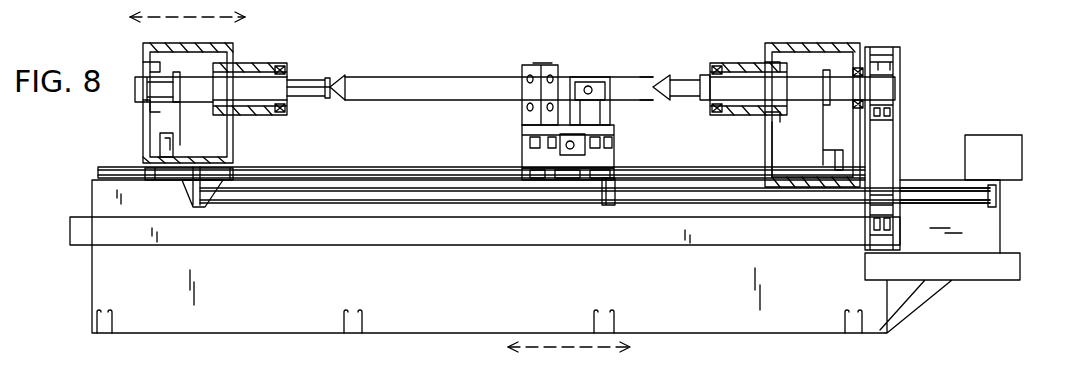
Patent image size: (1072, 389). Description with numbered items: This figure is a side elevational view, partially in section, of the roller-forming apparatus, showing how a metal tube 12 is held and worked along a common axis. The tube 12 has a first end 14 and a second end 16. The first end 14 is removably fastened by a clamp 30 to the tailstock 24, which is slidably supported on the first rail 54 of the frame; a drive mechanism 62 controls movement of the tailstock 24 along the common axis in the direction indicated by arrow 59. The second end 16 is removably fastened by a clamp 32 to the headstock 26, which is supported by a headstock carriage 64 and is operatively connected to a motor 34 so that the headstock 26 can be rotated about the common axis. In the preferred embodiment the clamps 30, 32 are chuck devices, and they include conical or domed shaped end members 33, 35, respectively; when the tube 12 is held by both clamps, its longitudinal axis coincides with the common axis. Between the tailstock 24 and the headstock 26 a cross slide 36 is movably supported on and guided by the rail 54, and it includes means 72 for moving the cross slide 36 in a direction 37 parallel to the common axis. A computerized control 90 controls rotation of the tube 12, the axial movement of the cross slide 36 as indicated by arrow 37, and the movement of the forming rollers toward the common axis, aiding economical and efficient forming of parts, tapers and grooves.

The metal tube 12 is at (418, 77).
The first end 14 is at (338, 100).
The second end 16 is at (660, 100).
The tailstock 24 is at (196, 94).
The headstock 26 is at (752, 88).
The clamp 30 is at (332, 77).
The clamp 32 is at (664, 78).
The end member 33 is at (352, 88).
The motor 34 is at (995, 233).
The end member 35 is at (650, 78).
The cross slide 36 is at (548, 53).
The arrow 37 is at (570, 350).
The first rail 54 is at (432, 175).
The arrow 59 is at (150, 20).
The drive mechanism 62 is at (218, 192).
The headstock carriage 64 is at (810, 43).
The means for moving cross slide 72 is at (724, 190).
The computerized control 90 is at (1008, 139).